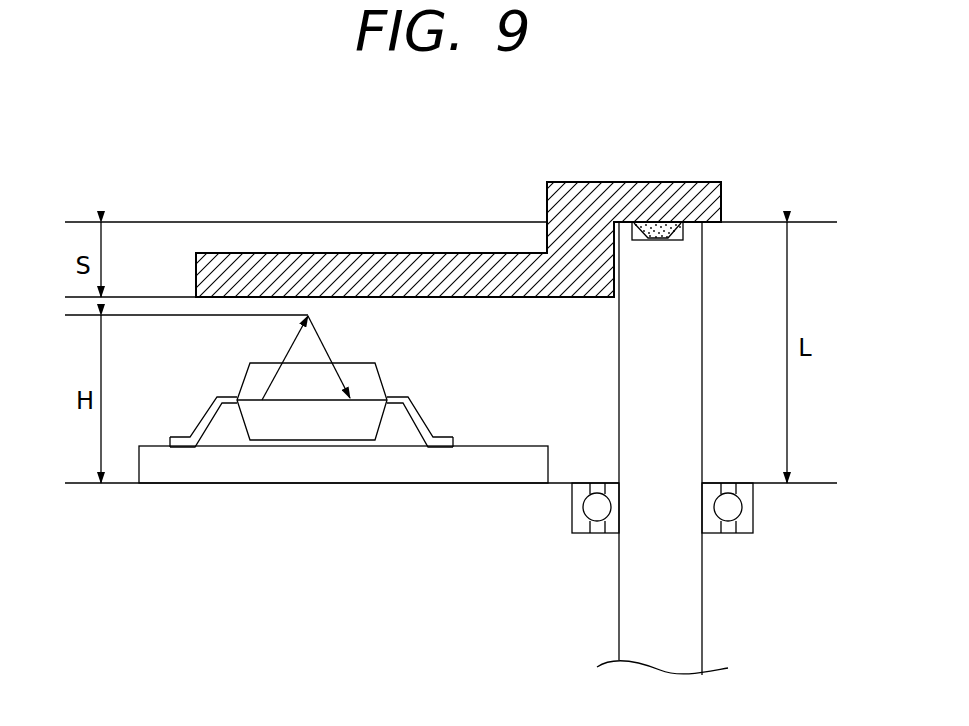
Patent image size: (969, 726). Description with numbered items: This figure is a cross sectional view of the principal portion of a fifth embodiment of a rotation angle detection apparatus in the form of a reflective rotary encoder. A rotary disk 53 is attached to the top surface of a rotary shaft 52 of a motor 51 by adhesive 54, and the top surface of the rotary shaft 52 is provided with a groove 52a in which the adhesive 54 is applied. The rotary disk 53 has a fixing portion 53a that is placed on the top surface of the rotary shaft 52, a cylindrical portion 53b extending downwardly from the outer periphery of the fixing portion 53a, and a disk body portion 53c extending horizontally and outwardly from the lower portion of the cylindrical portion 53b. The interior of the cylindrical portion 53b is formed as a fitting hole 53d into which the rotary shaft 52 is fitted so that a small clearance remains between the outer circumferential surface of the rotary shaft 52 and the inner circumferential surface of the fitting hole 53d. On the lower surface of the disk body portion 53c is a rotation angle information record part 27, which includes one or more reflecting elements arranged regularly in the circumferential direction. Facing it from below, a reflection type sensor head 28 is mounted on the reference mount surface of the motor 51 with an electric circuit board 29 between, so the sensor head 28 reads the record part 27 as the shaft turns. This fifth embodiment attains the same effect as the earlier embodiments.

The rotation angle information record part 27 is at (310, 297).
The reflection type sensor head 28 is at (242, 380).
The electric circuit board 29 is at (305, 470).
The motor 51 is at (608, 605).
The rotary shaft 52 is at (618, 418).
The groove 52a is at (684, 235).
The rotary disk 53 is at (232, 250).
The fixing portion 53a is at (577, 192).
The cylindrical portion 53b is at (546, 228).
The disk body portion 53c is at (342, 262).
The fitting hole 53d is at (616, 275).
The adhesive 54 is at (666, 232).